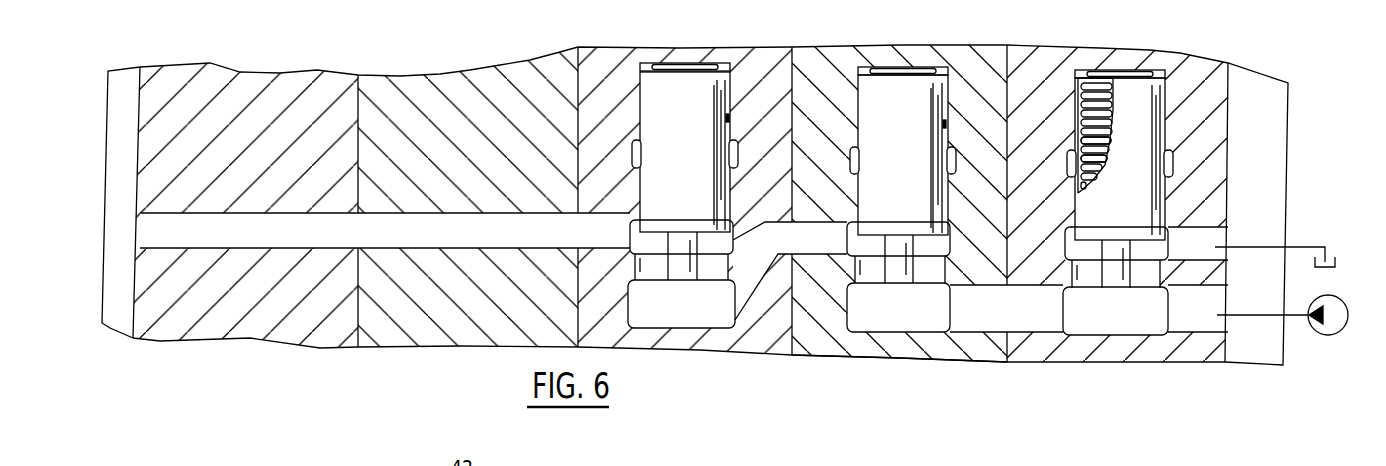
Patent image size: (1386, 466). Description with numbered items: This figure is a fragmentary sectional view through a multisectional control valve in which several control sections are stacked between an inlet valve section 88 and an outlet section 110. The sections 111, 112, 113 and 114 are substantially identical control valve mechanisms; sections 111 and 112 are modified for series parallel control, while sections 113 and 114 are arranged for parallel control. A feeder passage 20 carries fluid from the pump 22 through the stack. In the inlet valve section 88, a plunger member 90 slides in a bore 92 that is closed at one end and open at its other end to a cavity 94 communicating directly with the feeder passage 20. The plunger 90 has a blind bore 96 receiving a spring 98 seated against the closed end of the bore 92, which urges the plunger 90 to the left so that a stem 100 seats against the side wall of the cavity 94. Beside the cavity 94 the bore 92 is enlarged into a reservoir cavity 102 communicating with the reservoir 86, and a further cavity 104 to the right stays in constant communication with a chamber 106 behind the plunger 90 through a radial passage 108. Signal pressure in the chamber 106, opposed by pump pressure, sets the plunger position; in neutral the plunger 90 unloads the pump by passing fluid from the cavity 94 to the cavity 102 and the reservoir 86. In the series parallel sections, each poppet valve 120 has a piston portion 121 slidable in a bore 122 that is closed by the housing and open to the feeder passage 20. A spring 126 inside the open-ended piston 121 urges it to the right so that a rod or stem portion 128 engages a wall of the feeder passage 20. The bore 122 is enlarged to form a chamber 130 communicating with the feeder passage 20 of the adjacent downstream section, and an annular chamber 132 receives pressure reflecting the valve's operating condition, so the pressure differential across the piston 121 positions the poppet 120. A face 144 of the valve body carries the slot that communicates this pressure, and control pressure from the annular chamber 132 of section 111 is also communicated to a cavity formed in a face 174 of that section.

The outlet section 110 is at (127, 326).
The valve section 114 is at (318, 346).
The valve section 113 is at (465, 347).
The valve section 112 is at (711, 349).
The face of the valve section 174 is at (786, 350).
The valve section 111 is at (972, 354).
The face of the valve body 144 is at (1010, 352).
The inlet valve section 88 is at (1212, 62).
The chamber 130 is at (268, 241).
The reservoir cavity 102 is at (1166, 253).
The poppet valve 120 is at (700, 123).
The spring 126 is at (697, 62).
The piston portion 121 is at (718, 98).
The bore 122 is at (729, 121).
The annular chamber 132 is at (736, 163).
The rod or stem portion 128 is at (682, 277).
The feeder passage 20 is at (641, 324).
The plunger member 90 is at (1121, 168).
The bore 92 is at (1168, 112).
The cavity 104 is at (1174, 161).
The blind bore 96 is at (1082, 119).
The spring 98 is at (1079, 92).
The chamber 106 is at (1082, 149).
The radial passage 108 is at (1081, 165).
The stem 100 is at (1122, 285).
The cavity 94 is at (1070, 325).
The reservoir 86 is at (1338, 262).
The pump 22 is at (1348, 315).